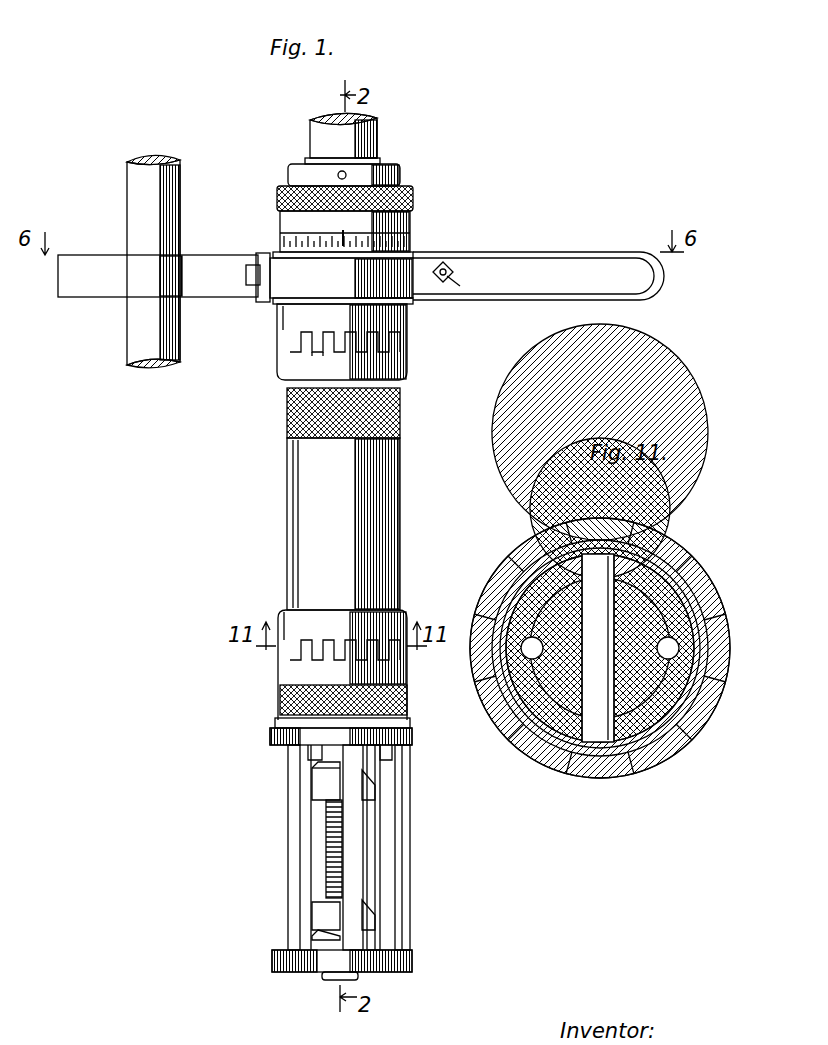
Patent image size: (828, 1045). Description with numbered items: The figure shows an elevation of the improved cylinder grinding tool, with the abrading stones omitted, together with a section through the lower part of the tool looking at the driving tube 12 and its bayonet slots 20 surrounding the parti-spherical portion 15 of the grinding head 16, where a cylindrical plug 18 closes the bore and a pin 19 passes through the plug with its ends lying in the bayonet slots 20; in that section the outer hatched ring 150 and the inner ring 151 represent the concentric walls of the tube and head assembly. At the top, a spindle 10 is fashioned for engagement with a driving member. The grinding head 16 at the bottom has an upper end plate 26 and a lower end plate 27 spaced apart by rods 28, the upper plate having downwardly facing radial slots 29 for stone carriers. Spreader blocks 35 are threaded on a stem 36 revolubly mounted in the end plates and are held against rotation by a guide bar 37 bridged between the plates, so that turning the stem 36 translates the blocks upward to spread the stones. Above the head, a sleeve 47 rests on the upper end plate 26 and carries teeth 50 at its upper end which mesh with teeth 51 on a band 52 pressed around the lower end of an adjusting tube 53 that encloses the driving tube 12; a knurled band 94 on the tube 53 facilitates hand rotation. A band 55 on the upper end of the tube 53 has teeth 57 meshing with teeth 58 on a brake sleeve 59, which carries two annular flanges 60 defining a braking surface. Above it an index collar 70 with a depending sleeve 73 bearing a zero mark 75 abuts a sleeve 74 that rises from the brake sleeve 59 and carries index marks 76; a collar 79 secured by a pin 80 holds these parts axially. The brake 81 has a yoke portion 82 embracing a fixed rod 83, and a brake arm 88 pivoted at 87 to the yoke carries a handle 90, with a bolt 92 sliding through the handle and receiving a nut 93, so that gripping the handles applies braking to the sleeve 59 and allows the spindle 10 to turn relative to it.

In FIG. 1, the spindle 10 is at (377, 133).
In FIG. 11, the driving tube 12 is at (650, 560).
In FIG. 11, the reduced parti-spherical portion 15 is at (538, 720).
In FIG. 1, the grinding head 16 is at (426, 744).
In FIG. 11, the cylindrical plug 18 is at (540, 590).
In FIG. 11, the pin 19 is at (660, 578).
In FIG. 11, the bayonet slots 20 is at (560, 590).
In FIG. 1, the upper end plate 26 is at (275, 746).
In FIG. 1, the lower end plate 27 is at (412, 962).
In FIG. 1, the rods 28 is at (288, 890).
In FIG. 1, the slots 29 is at (312, 752).
In FIG. 1, the spreader blocks 35 is at (318, 787).
In FIG. 1, the stem 36 is at (326, 846).
In FIG. 1, the guide bar 37 is at (380, 852).
In FIG. 1, the sleeve 47 is at (284, 650).
In FIG. 1, the teeth 50 is at (318, 662).
In FIG. 1, the teeth 51 is at (330, 645).
In FIG. 1, the band 52 is at (287, 610).
In FIG. 1, the adjusting tube 53 is at (287, 548).
In FIG. 1, the band 55 is at (408, 372).
In FIG. 1, the teeth 57 is at (312, 355).
In FIG. 1, the teeth 58 is at (318, 340).
In FIG. 1, the brake sleeve 59 is at (282, 322).
In FIG. 1, the annular flanges 60 is at (414, 255).
In FIG. 1, the index collar 70 is at (413, 196).
In FIG. 1, the depending sleeve 73 is at (283, 222).
In FIG. 1, the sleeve 74 is at (343, 250).
In FIG. 1, the zero mark 75 is at (350, 229).
In FIG. 1, the index marks 76 is at (412, 242).
In FIG. 1, the collar 79 is at (288, 178).
In FIG. 1, the pin 80 is at (338, 173).
In FIG. 1, the brake 81 is at (613, 242).
In FIG. 1, the yoke portion 82 is at (200, 268).
In FIG. 1, the fixed rod 83 is at (135, 200).
In FIG. 1, the pivot 87 is at (257, 290).
In FIG. 1, the brake arm 88 is at (275, 258).
In FIG. 1, the handle 90 is at (612, 300).
In FIG. 1, the bolt 92 is at (461, 273).
In FIG. 1, the nut 93 is at (455, 282).
In FIG. 1, the knurled band 94 is at (287, 416).
In FIG. 11, the outer ring 150 is at (515, 540).
In FIG. 11, the inner ring 151 is at (620, 548).